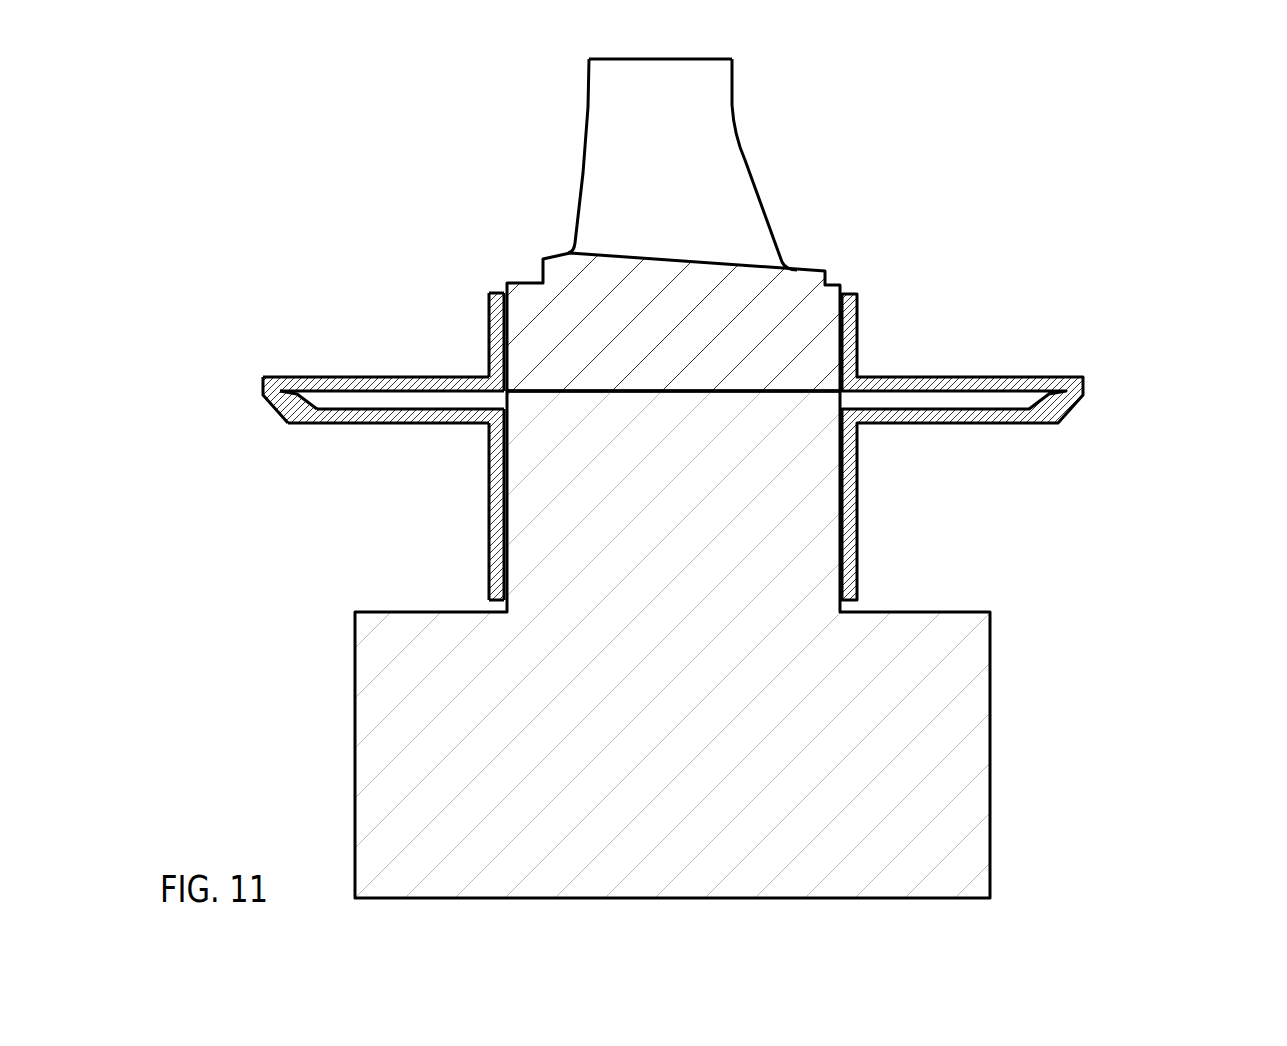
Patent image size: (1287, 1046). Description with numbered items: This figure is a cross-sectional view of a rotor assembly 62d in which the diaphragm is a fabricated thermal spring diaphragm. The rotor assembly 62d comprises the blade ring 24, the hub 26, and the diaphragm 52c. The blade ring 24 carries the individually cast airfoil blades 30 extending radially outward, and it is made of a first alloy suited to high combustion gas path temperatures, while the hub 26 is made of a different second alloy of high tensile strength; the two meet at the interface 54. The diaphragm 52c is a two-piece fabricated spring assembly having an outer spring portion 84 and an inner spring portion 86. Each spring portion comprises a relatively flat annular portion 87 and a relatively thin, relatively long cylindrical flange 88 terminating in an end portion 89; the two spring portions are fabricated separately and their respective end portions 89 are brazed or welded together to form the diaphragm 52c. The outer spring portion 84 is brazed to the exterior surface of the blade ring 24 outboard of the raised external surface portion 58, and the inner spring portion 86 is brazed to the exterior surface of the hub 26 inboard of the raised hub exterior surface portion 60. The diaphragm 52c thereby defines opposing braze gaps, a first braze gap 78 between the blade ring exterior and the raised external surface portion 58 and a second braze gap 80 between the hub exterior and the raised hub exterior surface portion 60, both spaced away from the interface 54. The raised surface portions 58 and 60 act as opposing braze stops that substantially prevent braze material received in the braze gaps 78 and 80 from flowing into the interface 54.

The annular blade ring 24 is at (673, 201).
The airfoil blade 30 is at (688, 58).
The hub 26 is at (703, 602).
The interface 54 is at (819, 390).
The diaphragm 52c is at (315, 424).
The raised external surface portion 58 is at (503, 350).
The raised hub exterior surface portion 60 is at (503, 488).
The rotor assembly 62d is at (1193, 148).
The first braze gap 78 is at (503, 292).
The second braze gap 80 is at (503, 575).
The outer spring portion 84 is at (344, 377).
The inner spring portion 86 is at (345, 423).
The flat annular portion 87 is at (488, 308).
The cylindrical flange 88 is at (422, 377).
The end portion 89 is at (292, 377).